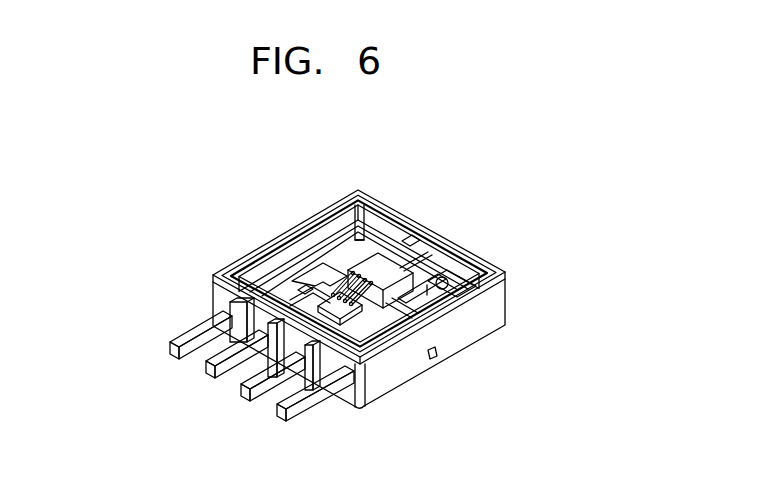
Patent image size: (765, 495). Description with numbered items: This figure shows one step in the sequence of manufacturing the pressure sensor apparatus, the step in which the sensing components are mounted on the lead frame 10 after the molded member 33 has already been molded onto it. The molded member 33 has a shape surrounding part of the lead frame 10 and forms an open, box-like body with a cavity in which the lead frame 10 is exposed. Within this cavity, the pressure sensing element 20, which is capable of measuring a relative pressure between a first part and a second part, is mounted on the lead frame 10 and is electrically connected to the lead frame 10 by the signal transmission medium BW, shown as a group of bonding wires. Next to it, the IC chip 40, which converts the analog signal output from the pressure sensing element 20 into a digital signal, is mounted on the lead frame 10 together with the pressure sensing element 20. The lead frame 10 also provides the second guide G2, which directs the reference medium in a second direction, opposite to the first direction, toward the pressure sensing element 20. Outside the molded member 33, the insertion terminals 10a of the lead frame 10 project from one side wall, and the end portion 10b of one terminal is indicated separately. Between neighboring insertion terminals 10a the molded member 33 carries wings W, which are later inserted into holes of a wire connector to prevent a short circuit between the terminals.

The lead frame 10 is at (140, 430).
The insertion terminals 10a is at (287, 398).
The lead end portion 10b is at (168, 347).
The pressure sensing element 20 is at (386, 258).
The molded member 33 is at (468, 340).
The IC chip 40 is at (330, 300).
The signal transmission medium BW is at (344, 272).
The second guide G2 is at (414, 274).
The wings W is at (243, 318).